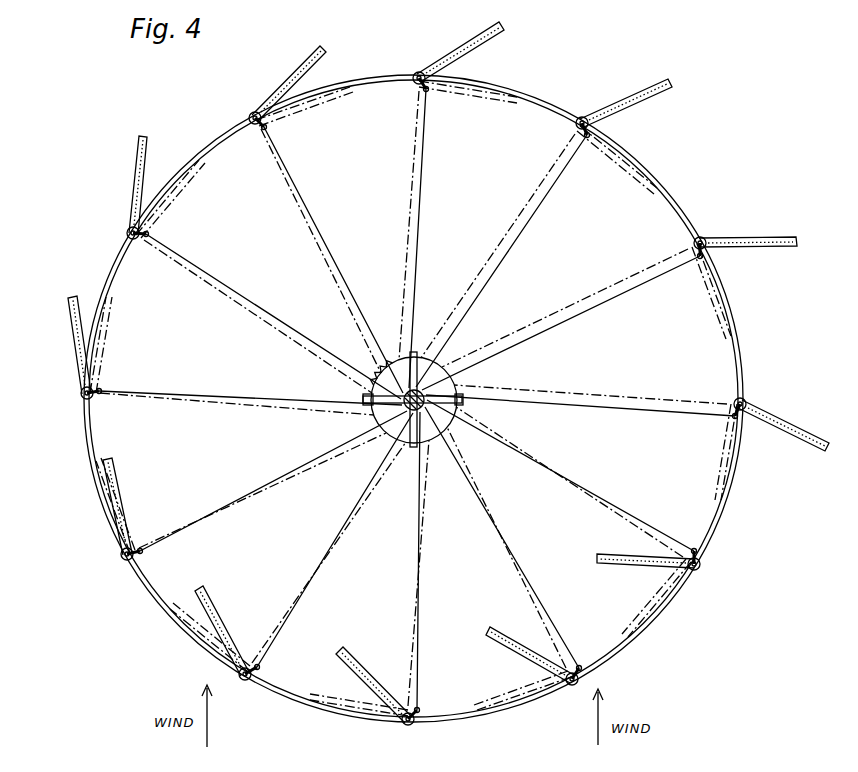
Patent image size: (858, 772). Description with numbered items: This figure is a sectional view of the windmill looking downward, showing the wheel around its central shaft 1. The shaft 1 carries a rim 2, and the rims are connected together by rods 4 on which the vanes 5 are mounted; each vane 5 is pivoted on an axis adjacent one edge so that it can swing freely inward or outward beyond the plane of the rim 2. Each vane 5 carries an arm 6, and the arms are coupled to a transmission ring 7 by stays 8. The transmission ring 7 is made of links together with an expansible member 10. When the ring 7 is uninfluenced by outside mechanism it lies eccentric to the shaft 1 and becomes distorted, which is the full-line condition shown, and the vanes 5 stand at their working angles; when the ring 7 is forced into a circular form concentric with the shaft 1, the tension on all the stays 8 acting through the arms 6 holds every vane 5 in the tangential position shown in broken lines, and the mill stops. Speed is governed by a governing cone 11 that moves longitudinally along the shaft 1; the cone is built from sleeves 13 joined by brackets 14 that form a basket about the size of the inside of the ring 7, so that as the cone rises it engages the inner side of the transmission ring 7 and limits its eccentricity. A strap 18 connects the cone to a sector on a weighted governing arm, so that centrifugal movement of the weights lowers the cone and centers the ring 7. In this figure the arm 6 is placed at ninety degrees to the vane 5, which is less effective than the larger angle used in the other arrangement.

The shaft 1 is at (445, 415).
The rim 2 is at (742, 366).
The rod 4 is at (700, 240).
The vane 5 is at (448, 372).
The arm 6 is at (700, 258).
The transmission ring 7 is at (378, 410).
The stay 8 is at (426, 546).
The expansible member 10 is at (375, 392).
The governing cone 11 is at (414, 400).
The sleeve 13 is at (389, 375).
The bracket 14 is at (412, 352).
The strap 18 is at (392, 440).